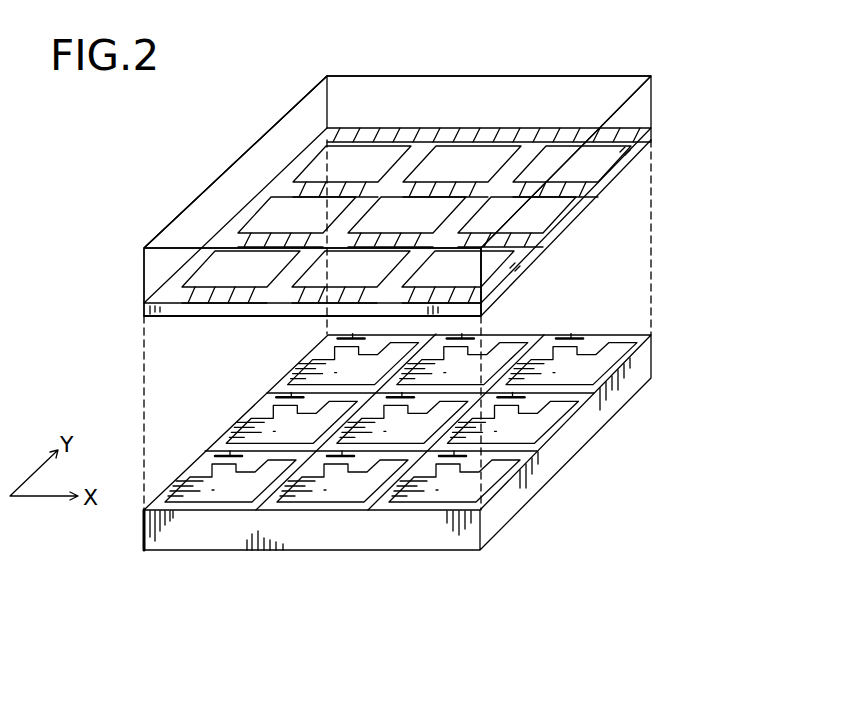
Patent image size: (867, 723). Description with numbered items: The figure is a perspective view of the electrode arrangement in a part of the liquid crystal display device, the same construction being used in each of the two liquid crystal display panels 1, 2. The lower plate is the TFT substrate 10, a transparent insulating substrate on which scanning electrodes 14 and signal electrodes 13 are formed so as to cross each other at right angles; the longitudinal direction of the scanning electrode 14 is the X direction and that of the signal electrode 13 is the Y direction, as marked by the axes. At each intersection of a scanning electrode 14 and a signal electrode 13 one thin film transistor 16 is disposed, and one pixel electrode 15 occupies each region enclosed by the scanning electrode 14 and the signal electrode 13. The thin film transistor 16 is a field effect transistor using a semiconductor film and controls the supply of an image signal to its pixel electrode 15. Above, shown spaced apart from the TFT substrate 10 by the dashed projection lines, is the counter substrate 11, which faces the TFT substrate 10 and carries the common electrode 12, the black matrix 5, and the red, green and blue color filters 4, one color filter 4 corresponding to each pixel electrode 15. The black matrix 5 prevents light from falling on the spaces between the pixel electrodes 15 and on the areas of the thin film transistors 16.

The liquid crystal display panel 1 is at (681, 83).
The liquid crystal display panel 2 is at (397, 196).
The RGB color filters 4 is at (370, 157).
The black matrix 5 is at (565, 130).
The TFT substrate 10 is at (187, 532).
The counter substrate 11 is at (143, 272).
The common electrode 12 is at (590, 204).
The signal electrode 13 is at (510, 362).
The scanning electrode 14 is at (555, 398).
The pixel electrode 15 is at (495, 472).
The thin film transistor 16 is at (448, 462).